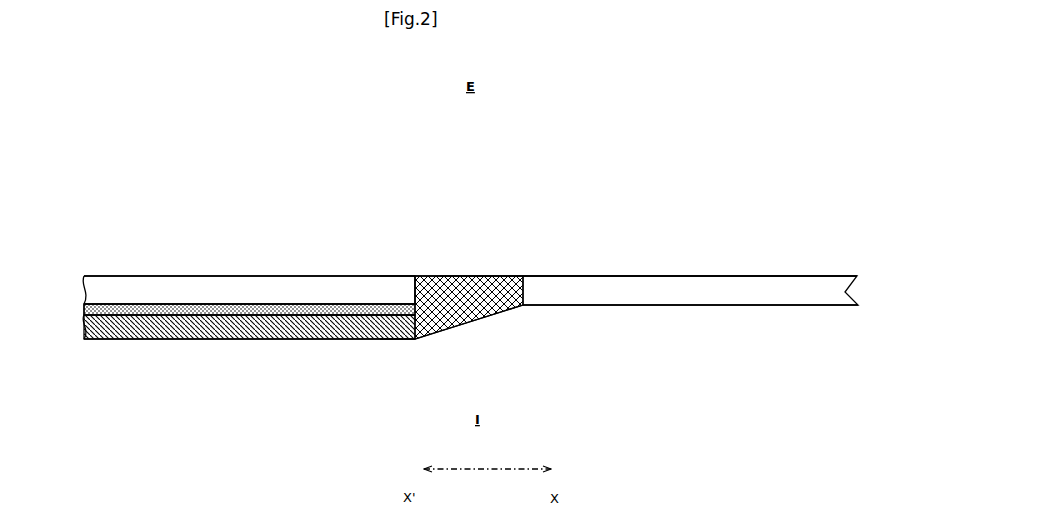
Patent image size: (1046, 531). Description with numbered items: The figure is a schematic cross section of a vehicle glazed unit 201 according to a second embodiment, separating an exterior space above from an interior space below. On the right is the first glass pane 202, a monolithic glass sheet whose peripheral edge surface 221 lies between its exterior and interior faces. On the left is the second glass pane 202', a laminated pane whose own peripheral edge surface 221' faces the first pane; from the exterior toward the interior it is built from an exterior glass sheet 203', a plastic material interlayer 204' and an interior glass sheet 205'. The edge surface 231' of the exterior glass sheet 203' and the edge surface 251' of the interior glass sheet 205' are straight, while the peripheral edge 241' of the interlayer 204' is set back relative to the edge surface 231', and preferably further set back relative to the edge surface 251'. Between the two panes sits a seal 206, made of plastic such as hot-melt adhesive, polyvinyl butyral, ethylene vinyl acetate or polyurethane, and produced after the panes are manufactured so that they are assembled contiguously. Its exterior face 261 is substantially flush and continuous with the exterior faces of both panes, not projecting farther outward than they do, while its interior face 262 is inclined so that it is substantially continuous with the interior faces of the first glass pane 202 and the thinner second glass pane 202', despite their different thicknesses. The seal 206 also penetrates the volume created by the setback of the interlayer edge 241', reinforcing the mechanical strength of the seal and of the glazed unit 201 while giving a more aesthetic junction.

The glazed unit 201 is at (422, 185).
The second glass pane 202' is at (164, 246).
The first glass pane 202 is at (690, 229).
The seal 206 is at (472, 262).
The exterior glass sheet 203' is at (237, 244).
The plastic material interlayer 204' is at (249, 361).
The interior glass sheet 205' is at (249, 387).
The peripheral edge surface of the second glass pane 221' is at (361, 250).
The edge surface of the exterior glass sheet 231' is at (386, 258).
The peripheral edge of the interlayer 241' is at (359, 296).
The edge surface of the interior glass sheet 251' is at (383, 374).
The exterior face of the seal 261 is at (500, 275).
The interior face of the seal 262 is at (435, 340).
The peripheral edge surface of the first glass pane 221 is at (559, 259).